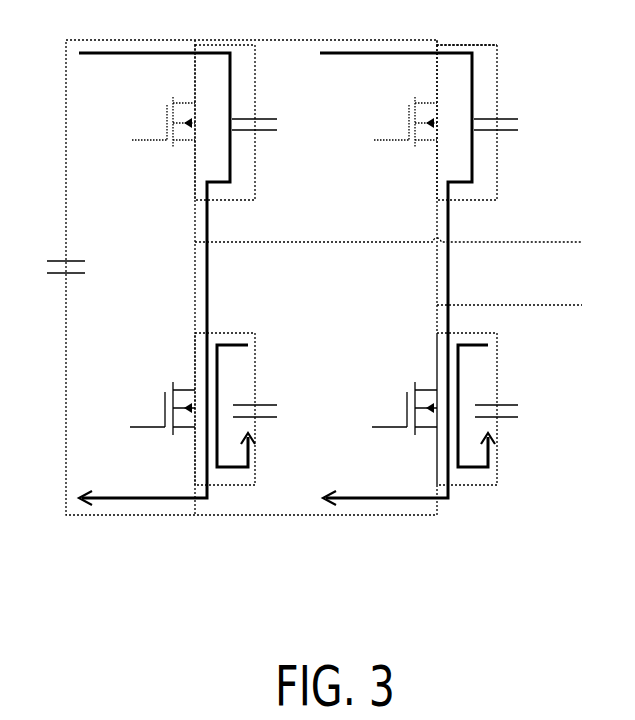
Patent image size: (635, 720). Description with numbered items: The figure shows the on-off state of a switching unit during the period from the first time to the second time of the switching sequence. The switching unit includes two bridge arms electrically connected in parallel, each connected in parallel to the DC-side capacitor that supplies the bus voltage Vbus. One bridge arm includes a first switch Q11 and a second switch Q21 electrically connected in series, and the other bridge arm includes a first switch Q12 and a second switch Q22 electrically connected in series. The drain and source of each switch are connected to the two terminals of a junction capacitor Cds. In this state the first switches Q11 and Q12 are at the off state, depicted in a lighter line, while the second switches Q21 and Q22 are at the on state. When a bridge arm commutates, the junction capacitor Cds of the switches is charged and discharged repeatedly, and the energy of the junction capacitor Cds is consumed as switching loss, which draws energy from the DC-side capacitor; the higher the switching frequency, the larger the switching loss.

The first switch Q11 is at (152, 122).
The first switch Q12 is at (397, 122).
The second switch Q21 is at (152, 408).
The second switch Q22 is at (397, 408).
The junction capacitor Cds is at (395, 275).
The bus voltage source Vbus is at (94, 269).